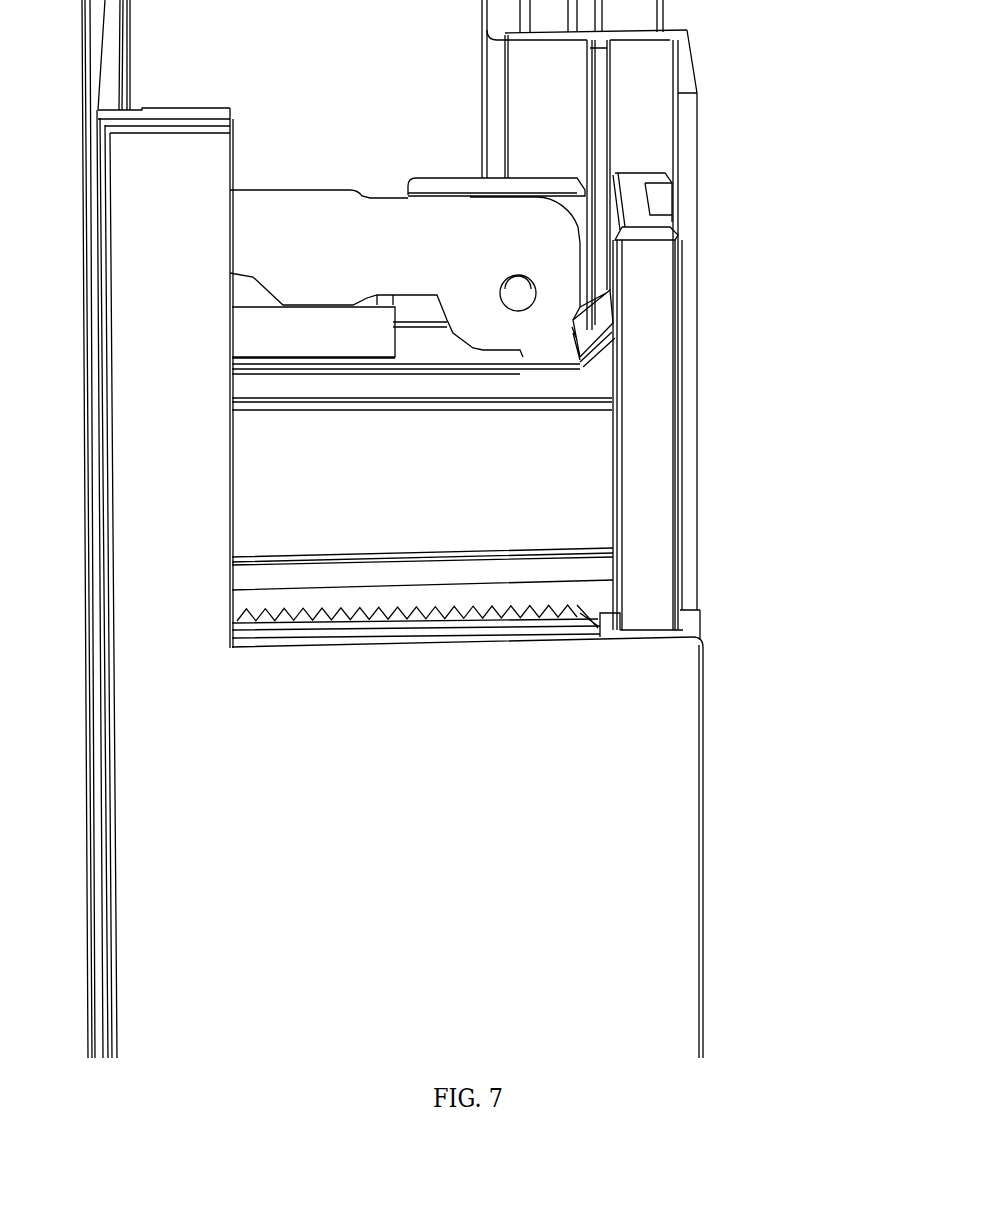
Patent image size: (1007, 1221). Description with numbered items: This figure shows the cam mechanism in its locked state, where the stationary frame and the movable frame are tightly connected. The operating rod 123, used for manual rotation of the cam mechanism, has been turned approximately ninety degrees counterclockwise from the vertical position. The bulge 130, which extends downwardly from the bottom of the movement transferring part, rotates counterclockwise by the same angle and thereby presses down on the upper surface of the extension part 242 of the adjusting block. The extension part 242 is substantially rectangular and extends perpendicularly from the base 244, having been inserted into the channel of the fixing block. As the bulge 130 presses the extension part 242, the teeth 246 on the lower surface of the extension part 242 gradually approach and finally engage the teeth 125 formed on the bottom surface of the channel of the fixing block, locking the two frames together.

The operating rod 123 is at (265, 217).
The bulge 130 is at (545, 348).
The extension part 242 is at (415, 370).
The base 244 is at (645, 368).
The teeth 246 is at (348, 610).
The teeth 125 is at (513, 618).